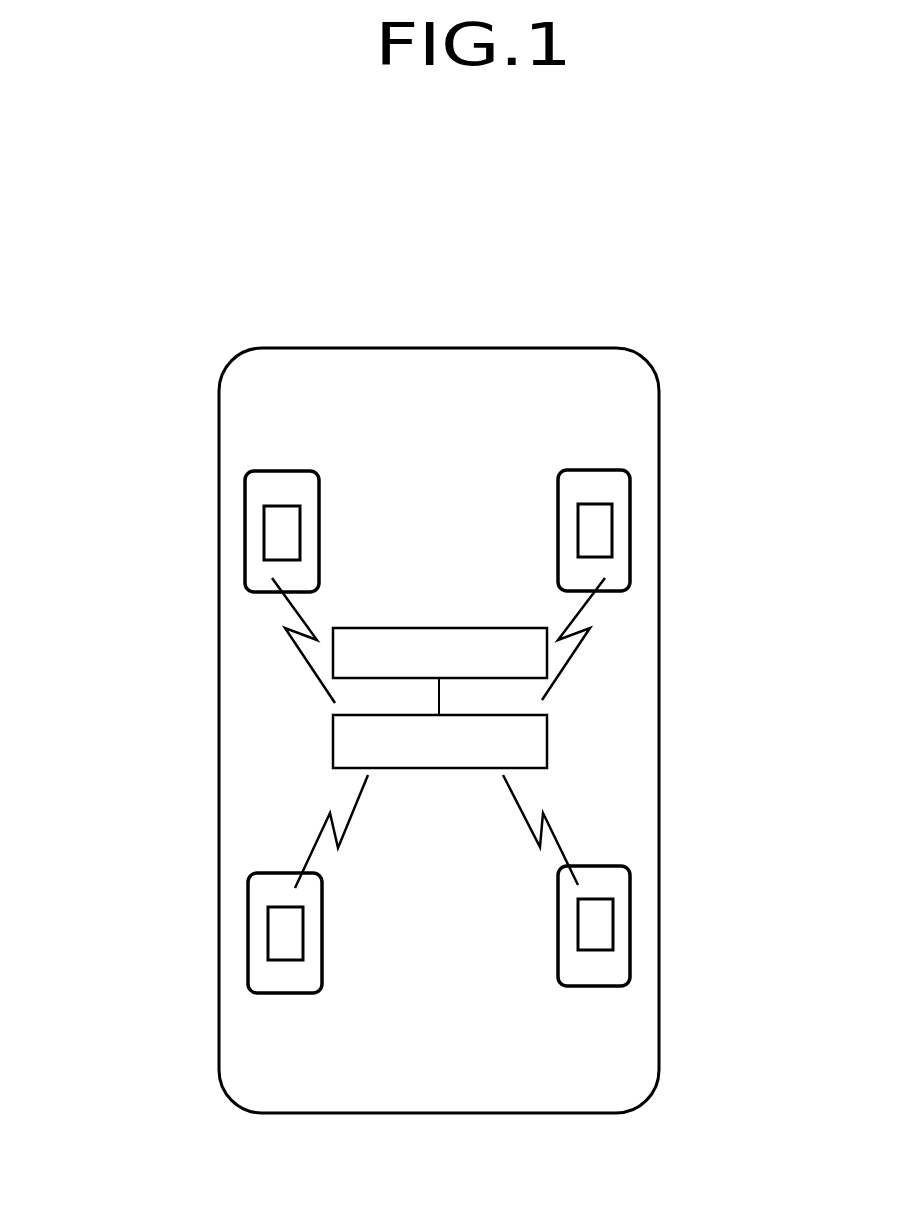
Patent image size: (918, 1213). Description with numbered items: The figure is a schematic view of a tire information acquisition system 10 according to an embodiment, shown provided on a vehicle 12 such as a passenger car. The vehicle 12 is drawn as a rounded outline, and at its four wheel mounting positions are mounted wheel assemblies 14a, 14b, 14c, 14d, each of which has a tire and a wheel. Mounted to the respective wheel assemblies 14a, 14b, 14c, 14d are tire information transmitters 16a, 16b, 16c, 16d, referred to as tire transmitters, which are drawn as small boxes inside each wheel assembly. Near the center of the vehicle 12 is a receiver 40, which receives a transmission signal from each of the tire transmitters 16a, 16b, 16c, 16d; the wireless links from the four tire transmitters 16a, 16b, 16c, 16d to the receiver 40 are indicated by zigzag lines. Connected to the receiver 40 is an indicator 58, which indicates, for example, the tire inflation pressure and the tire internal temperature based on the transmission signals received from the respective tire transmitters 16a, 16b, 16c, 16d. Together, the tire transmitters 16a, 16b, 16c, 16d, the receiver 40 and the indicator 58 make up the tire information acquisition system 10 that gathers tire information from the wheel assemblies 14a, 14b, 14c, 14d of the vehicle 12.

The tire information acquisition system 10 is at (645, 219).
The vehicle 12 is at (560, 348).
The wheel assembly 14a is at (279, 471).
The wheel assembly 14b is at (593, 468).
The wheel assembly 14c is at (283, 873).
The wheel assembly 14d is at (595, 864).
The tire information transmitter 16a is at (265, 533).
The tire information transmitter 16b is at (612, 530).
The tire information transmitter 16c is at (267, 933).
The tire information transmitter 16d is at (612, 923).
The indicator 58 is at (467, 627).
The receiver 40 is at (547, 727).